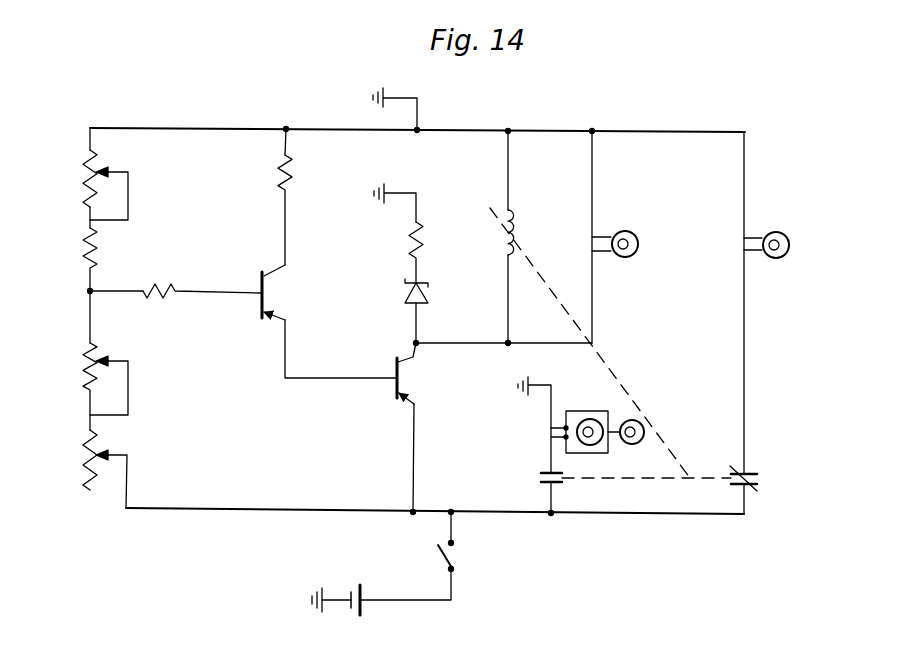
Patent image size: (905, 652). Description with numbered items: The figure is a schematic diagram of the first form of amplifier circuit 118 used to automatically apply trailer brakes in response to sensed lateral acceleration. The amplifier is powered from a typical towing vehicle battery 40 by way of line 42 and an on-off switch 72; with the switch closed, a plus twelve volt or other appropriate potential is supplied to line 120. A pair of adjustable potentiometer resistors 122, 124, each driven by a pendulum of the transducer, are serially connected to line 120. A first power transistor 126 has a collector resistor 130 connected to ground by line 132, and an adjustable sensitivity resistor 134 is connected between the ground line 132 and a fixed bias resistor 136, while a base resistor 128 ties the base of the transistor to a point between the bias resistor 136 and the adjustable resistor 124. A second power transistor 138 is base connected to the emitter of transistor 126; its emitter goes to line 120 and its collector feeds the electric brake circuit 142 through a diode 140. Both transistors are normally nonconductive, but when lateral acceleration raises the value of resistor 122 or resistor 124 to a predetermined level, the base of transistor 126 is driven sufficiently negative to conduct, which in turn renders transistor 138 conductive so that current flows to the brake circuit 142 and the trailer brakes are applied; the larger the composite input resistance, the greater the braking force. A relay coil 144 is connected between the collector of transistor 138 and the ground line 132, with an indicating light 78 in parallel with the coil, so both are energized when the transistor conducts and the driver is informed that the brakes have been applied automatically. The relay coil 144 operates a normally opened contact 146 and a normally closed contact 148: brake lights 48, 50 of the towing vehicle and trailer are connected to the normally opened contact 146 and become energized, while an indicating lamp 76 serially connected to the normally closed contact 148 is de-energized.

The control circuit 118 is at (172, 114).
The line 120 is at (258, 511).
The adjustable potentiometer resistor 122 is at (92, 452).
The adjustable potentiometer resistor 124 is at (90, 358).
The first power transistor 126 is at (258, 322).
The base resistor 128 is at (188, 268).
The collector resistor 130 is at (290, 179).
The ground line 132 is at (308, 130).
The adjustable sensitivity resistor 134 is at (95, 175).
The fixed bias resistor 136 is at (92, 246).
The second power transistor 138 is at (392, 397).
The diode 140 is at (428, 293).
The electric brake circuit 142 is at (420, 247).
The relay coil 144 is at (512, 250).
The normally opened contact 146 is at (541, 472).
The normally closed contact 148 is at (747, 476).
The indicating light 78 is at (634, 238).
The indicating lamp 76 is at (782, 238).
The brake light 48 is at (590, 426).
The brake light 50 is at (636, 421).
The on-off switch 72 is at (437, 551).
The towing vehicle battery 40 is at (348, 598).
The line 42 is at (388, 602).